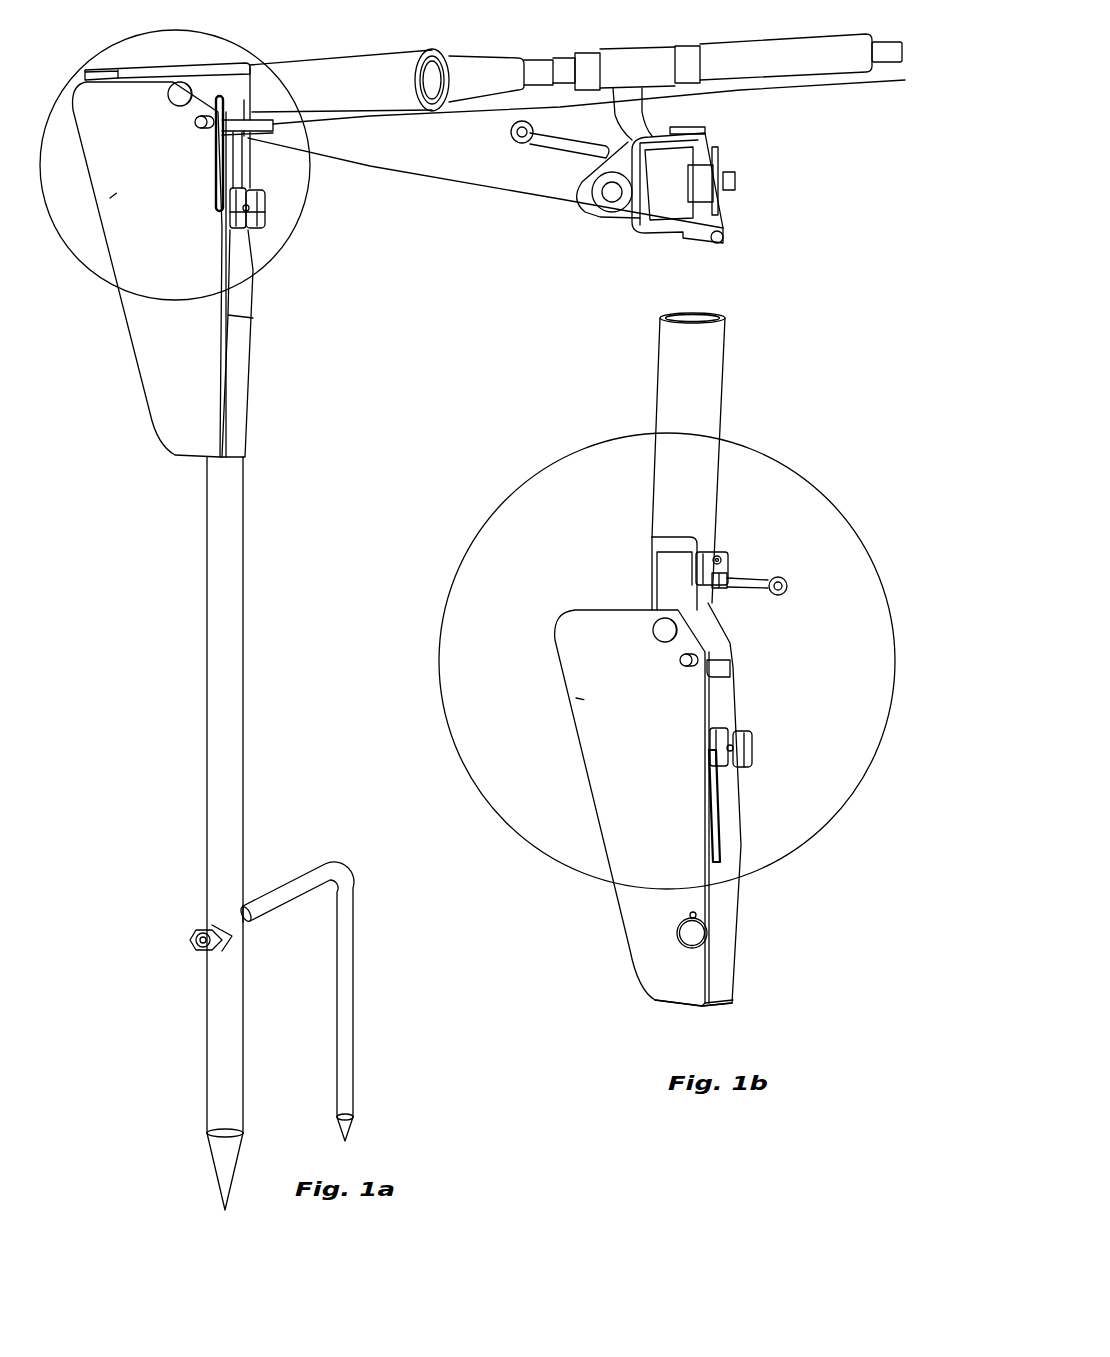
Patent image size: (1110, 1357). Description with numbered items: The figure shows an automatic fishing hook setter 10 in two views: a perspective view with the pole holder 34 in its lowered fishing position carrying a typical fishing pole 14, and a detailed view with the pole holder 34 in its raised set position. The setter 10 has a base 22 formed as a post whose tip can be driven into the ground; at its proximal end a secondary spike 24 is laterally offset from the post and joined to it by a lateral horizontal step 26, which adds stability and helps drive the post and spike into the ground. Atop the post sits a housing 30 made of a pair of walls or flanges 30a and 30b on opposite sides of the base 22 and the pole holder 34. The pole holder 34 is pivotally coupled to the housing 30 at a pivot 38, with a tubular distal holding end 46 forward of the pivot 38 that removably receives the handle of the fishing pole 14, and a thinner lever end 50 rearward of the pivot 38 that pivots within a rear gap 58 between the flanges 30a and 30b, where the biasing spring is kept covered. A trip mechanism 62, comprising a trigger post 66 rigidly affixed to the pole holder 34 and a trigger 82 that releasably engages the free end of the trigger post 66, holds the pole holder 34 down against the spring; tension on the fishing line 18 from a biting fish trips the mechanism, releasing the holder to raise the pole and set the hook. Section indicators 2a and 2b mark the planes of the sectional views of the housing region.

In FIG. 1A, the automatic fishing hook setter 10 is at (150, 487).
In FIG. 1B, the automatic fishing hook setter 10 is at (563, 808).
In FIG. 1A, the fishing pole 14 is at (587, 50).
In FIG. 1A, the fishing line 18 is at (503, 187).
In FIG. 1A, the base 22 is at (205, 502).
In FIG. 1B, the base 22 is at (636, 975).
In FIG. 1A, the secondary spike 24 is at (355, 983).
In FIG. 1A, the lateral horizontal step 26 is at (286, 872).
In FIG. 1A, the housing 30 is at (130, 343).
In FIG. 1B, the housing 30 is at (625, 898).
In FIG. 1A, the bracket or flange 30a is at (150, 382).
In FIG. 1B, the bracket or flange 30a is at (625, 937).
In FIG. 1A, the bracket or flange 30b is at (250, 372).
In FIG. 1B, the bracket or flange 30b is at (742, 908).
In FIG. 1A, the pole holder 34 is at (322, 67).
In FIG. 1B, the pole holder 34 is at (715, 390).
In FIG. 1A, the pivot 38 is at (182, 86).
In FIG. 1B, the pivot 38 is at (655, 628).
In FIG. 1A, the distal holding end 46 is at (382, 53).
In FIG. 1B, the distal holding end 46 is at (663, 397).
In FIG. 1A, the lever end 50 is at (155, 63).
In FIG. 1A, the rear gap 58 is at (113, 197).
In FIG. 1B, the rear gap 58 is at (578, 698).
In FIG. 1A, the trip mechanism 62 is at (280, 208).
In FIG. 1B, the trigger post 66 is at (745, 575).
In FIG. 1A, the trigger 82 is at (216, 168).
In FIG. 1B, the trigger 82 is at (705, 803).
In FIG. 1A, the section line 2a is at (308, 124).
In FIG. 1B, the section line 2b is at (897, 627).